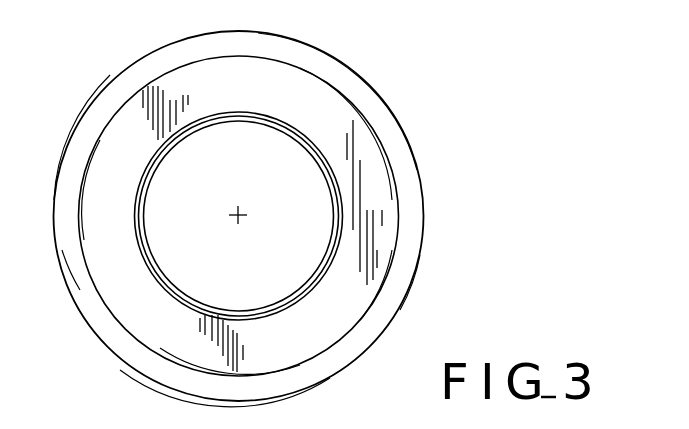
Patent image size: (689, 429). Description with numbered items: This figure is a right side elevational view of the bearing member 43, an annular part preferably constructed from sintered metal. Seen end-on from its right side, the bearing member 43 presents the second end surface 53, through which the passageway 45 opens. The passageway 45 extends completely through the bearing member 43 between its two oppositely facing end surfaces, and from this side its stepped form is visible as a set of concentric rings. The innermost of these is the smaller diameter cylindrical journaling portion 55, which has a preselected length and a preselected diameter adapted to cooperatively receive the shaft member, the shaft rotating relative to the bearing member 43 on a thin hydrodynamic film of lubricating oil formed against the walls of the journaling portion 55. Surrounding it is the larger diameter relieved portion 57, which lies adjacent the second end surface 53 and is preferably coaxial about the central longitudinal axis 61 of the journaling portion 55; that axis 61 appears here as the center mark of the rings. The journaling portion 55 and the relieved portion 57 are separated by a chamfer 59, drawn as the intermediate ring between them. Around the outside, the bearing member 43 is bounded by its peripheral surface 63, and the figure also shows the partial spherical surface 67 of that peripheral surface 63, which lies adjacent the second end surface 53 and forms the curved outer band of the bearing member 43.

The bearing member 43 is at (432, 256).
The passageway 45 is at (216, 178).
The second end surface 53 is at (345, 124).
The cylindrical journaling portion 55 is at (259, 127).
The relieved portion 57 is at (143, 253).
The chamfer 59 is at (307, 148).
The central longitudinal axis 61 is at (243, 219).
The peripheral surface 63 is at (419, 164).
The partial spherical surface 67 is at (395, 135).